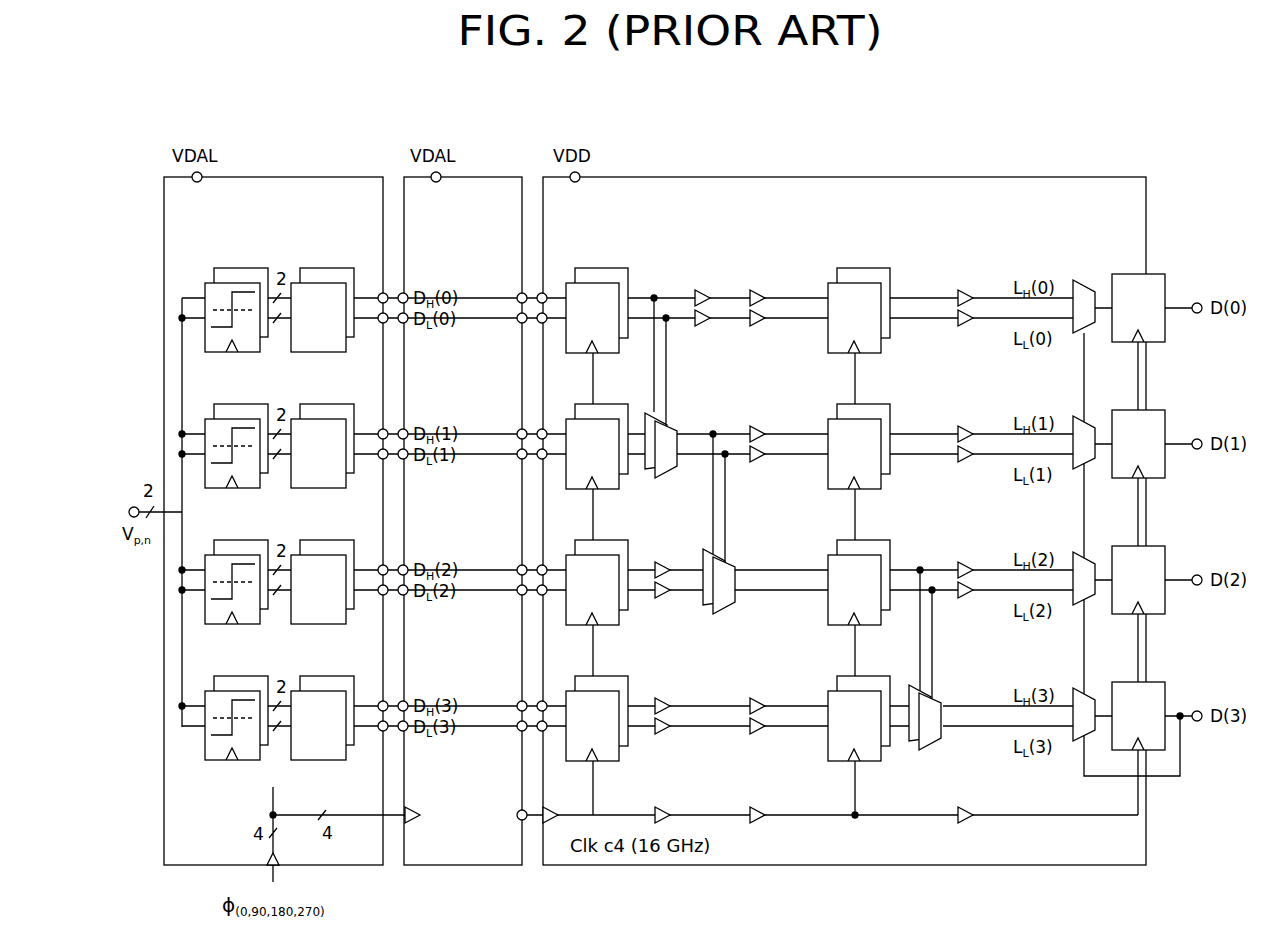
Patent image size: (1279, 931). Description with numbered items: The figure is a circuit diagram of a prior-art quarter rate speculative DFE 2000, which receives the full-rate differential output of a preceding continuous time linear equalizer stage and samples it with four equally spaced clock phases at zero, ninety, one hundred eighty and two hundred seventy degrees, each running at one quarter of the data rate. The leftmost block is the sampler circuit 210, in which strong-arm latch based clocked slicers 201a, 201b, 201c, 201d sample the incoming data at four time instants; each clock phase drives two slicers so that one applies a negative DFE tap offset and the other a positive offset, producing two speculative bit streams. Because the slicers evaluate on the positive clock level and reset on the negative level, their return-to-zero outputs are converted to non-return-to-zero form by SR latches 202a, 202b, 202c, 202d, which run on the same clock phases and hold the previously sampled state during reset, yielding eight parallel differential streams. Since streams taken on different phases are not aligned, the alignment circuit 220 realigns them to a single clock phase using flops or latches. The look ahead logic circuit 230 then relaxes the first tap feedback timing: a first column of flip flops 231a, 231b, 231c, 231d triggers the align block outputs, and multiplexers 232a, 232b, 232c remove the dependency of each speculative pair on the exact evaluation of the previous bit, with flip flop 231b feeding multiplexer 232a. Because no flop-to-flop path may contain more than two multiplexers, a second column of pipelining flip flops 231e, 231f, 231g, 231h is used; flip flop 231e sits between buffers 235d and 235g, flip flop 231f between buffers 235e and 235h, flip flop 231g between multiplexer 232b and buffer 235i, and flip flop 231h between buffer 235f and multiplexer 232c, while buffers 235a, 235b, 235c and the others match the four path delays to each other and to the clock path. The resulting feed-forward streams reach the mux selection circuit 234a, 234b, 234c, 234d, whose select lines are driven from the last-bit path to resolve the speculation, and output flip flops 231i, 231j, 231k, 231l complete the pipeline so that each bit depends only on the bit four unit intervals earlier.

The quarter rate speculative DFE 2000 is at (1171, 161).
The sampler circuit 210 is at (325, 177).
The alignment circuit 220 is at (462, 177).
The look ahead logic circuit 230 is at (1075, 177).
The slicer 201a is at (238, 268).
The slicer 201b is at (238, 404).
The slicer 201c is at (238, 540).
The slicer 201d is at (238, 676).
The SR latch 202a is at (322, 268).
The SR latch 202b is at (322, 404).
The SR latch 202c is at (322, 540).
The SR latch 202d is at (322, 676).
The flip flop 231a is at (597, 268).
The flip flop 231b is at (597, 404).
The flip flop 231c is at (597, 540).
The flip flop 231d is at (597, 676).
The flip flop 231e is at (856, 268).
The flip flop 231f is at (856, 404).
The flip flop 231g is at (856, 540).
The flip flop 231h is at (856, 676).
The flip-flop 231i is at (1150, 274).
The flip-flop 231j is at (1150, 410).
The flip-flop 231k is at (1150, 546).
The flip-flop 231l is at (1150, 682).
The multiplexer 232a is at (668, 425).
The multiplexer 232b is at (726, 562).
The multiplexer 232c is at (932, 697).
The mux selection circuit 234a is at (1085, 283).
The mux selection circuit 234b is at (1085, 420).
The mux selection circuit 234c is at (1085, 555).
The mux selection circuit 234d is at (1085, 691).
The buffer 235a is at (703, 290).
The buffer 235b is at (665, 562).
The buffer 235c is at (665, 698).
The buffer 235d is at (760, 290).
The buffer 235e is at (760, 426).
The buffer 235f is at (760, 698).
The buffer 235g is at (968, 290).
The buffer 235h is at (968, 426).
The buffer 235i is at (968, 562).